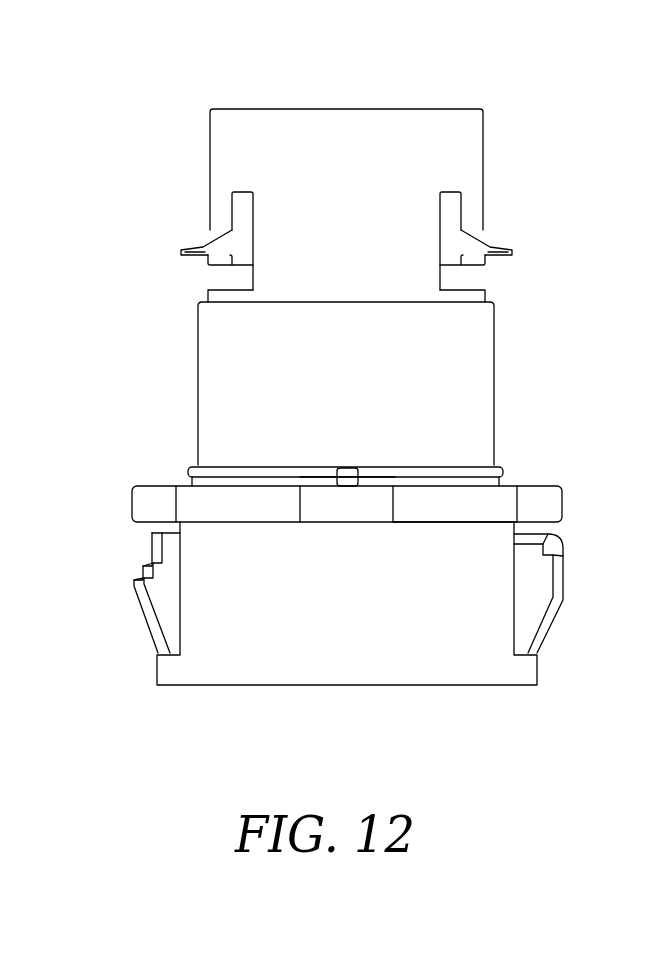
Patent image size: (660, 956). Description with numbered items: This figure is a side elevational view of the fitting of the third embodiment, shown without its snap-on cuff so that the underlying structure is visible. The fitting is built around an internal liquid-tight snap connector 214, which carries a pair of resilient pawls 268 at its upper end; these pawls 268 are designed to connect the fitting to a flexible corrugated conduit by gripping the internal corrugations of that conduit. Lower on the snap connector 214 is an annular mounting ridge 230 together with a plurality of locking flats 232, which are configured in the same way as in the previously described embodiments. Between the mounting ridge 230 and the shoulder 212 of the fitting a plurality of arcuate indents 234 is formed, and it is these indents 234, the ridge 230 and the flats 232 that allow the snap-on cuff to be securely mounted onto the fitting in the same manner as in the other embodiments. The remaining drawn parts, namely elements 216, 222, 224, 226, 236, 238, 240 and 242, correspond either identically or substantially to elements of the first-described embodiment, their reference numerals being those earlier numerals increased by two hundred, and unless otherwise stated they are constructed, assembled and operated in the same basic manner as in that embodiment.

The shoulder 212 is at (143, 498).
The internal liquid-tight snap connector 214 is at (535, 268).
The base 216 is at (277, 653).
The upper housing 222 is at (440, 147).
The body portion 224 is at (445, 382).
The shoulder 226 is at (494, 307).
The annular mounting ridge 230 is at (462, 467).
The locking flats 232 is at (190, 480).
The arcuate indents 234 is at (423, 482).
The plate portion 236 is at (474, 516).
The right latch 238 is at (522, 613).
The left latch 240 is at (163, 607).
The latch shoulder 242 is at (150, 567).
The resilient pawls 268 is at (199, 238).